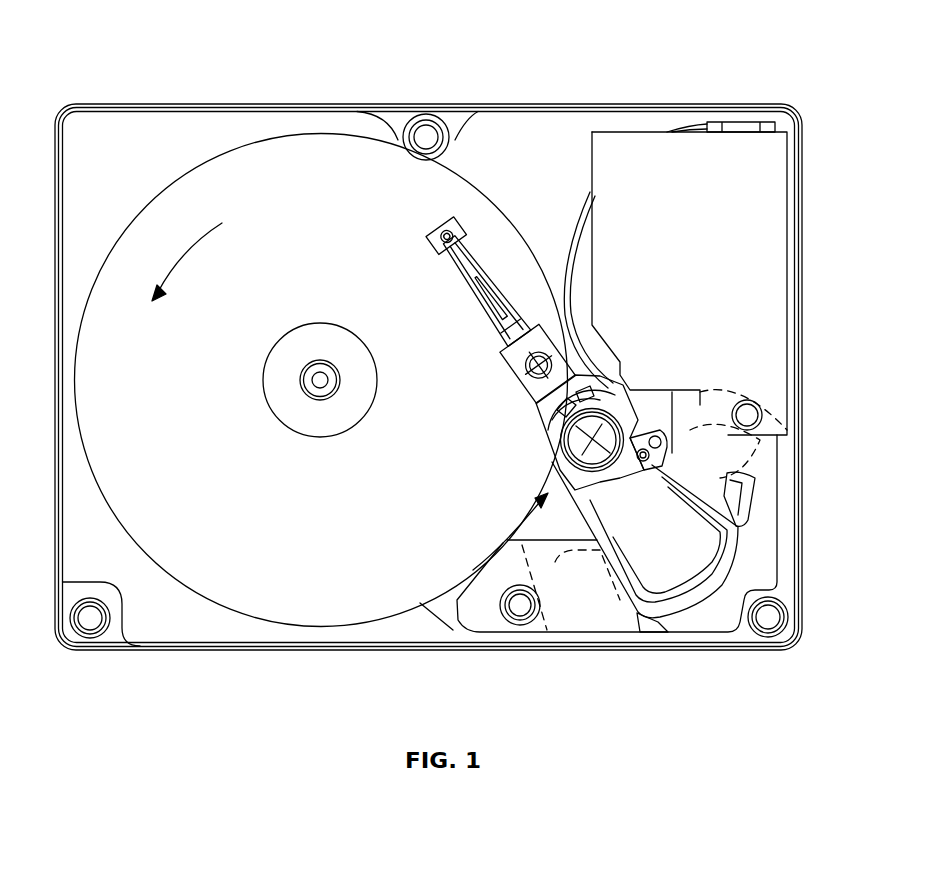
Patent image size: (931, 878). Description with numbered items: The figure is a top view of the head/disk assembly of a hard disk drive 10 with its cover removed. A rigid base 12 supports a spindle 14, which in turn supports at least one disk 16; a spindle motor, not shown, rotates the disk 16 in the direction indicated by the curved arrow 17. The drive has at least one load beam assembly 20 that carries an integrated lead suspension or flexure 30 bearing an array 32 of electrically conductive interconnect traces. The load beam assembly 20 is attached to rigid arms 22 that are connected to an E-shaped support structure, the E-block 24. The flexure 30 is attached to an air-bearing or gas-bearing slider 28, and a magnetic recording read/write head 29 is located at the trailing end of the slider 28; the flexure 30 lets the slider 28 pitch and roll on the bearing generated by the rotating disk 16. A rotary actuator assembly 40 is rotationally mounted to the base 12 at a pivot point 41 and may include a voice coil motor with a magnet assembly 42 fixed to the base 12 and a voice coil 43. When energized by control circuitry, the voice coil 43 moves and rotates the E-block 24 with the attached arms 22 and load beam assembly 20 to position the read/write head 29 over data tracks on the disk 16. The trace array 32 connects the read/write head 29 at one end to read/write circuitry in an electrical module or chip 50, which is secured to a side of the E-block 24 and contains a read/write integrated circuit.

The hard disk drive 10 is at (134, 48).
The rigid base 12 is at (206, 655).
The spindle 14 is at (278, 343).
The disk 16 is at (306, 612).
The curved arrow 17 is at (193, 247).
The load beam assembly 20 is at (487, 358).
The rigid arms 22 is at (520, 370).
The E-block 24 is at (546, 425).
The slider 28 is at (470, 224).
The read/write head 29 is at (437, 228).
The flexure 30 is at (468, 240).
The array of interconnect traces 32 is at (480, 280).
The rotary actuator assembly 40 is at (525, 512).
The pivot point 41 is at (554, 455).
The magnet assembly 42 is at (734, 400).
The voice coil 43 is at (740, 522).
The electrical module or chip 50 is at (636, 392).